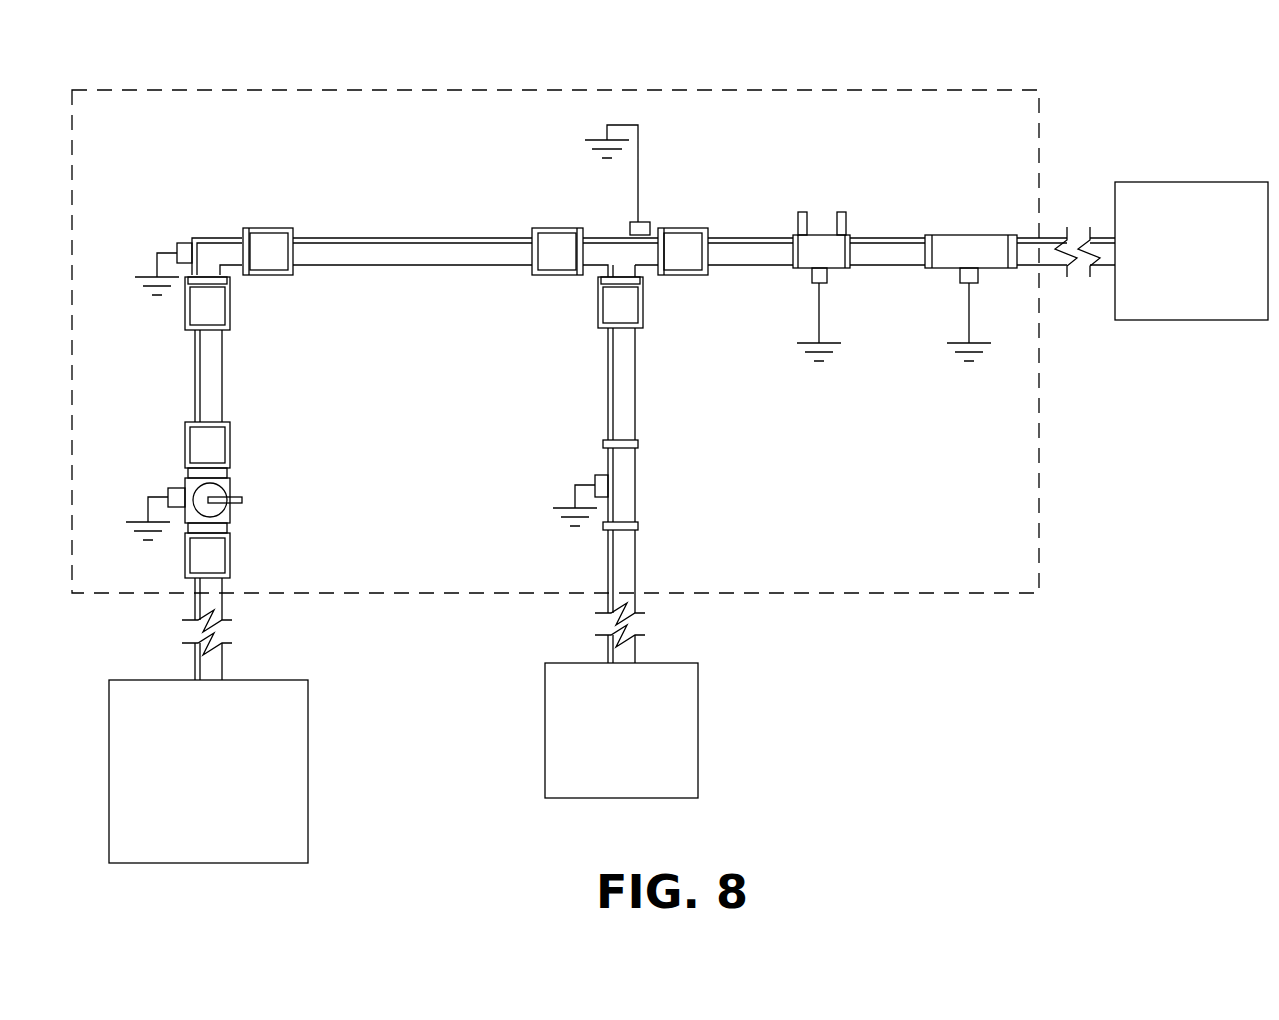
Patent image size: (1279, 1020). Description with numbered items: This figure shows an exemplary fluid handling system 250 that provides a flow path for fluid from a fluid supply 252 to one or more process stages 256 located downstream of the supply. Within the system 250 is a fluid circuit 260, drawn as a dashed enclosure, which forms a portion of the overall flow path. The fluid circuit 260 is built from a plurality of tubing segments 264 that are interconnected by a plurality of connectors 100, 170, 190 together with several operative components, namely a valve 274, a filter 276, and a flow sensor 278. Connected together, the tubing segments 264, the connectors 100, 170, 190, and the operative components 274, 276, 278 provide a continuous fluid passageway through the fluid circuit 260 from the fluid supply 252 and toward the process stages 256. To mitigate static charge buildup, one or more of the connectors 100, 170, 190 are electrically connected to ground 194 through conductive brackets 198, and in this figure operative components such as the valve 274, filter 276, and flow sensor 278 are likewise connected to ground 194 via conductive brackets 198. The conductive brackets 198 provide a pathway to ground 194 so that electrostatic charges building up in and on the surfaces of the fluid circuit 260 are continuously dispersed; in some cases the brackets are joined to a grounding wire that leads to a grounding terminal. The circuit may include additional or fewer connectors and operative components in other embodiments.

The connector 100 is at (660, 467).
The connector 170 is at (208, 225).
The connector 190 is at (616, 224).
The ground 194 is at (153, 277).
The conductive bracket 198 is at (180, 243).
The fluid handling system 250 is at (1135, 42).
The fluid supply 252 is at (308, 735).
The process stage 256 is at (698, 718).
The fluid circuit 260 is at (256, 90).
The tubing segment 264 is at (478, 267).
The valve 274 is at (250, 486).
The filter 276 is at (945, 268).
The flow sensor 278 is at (823, 260).